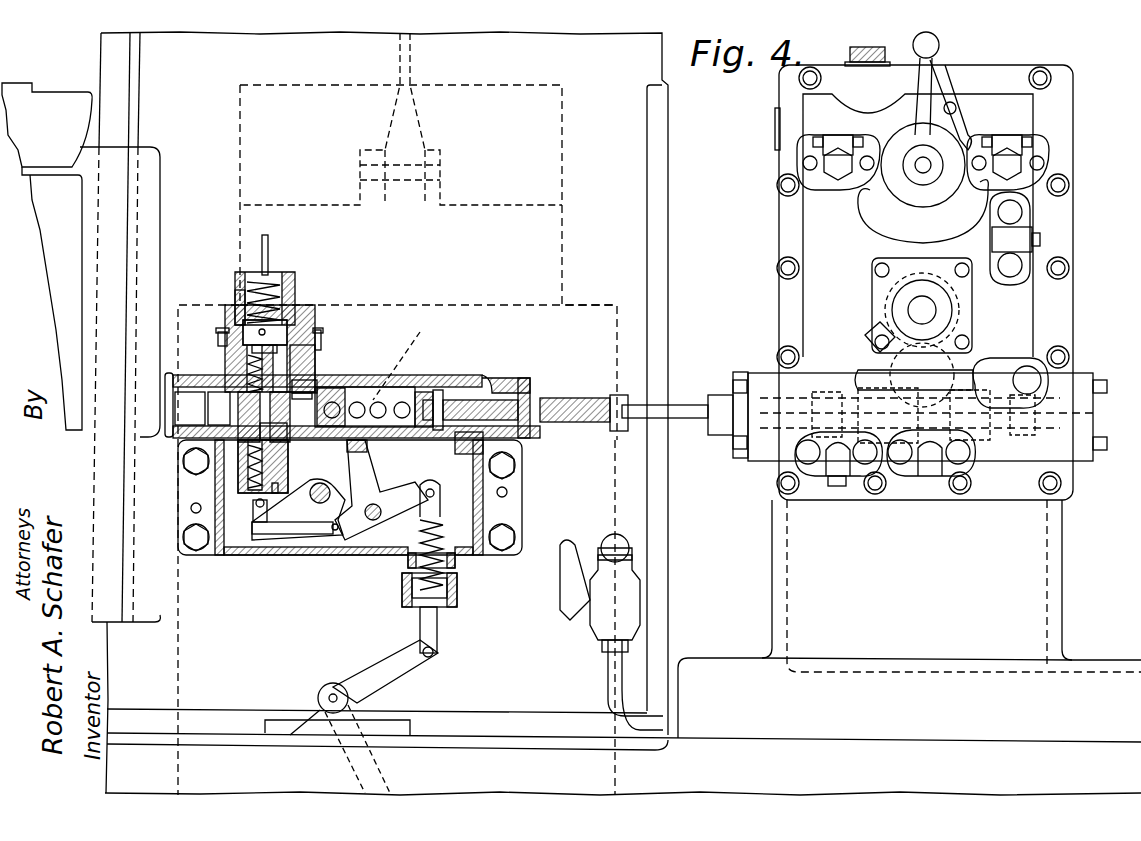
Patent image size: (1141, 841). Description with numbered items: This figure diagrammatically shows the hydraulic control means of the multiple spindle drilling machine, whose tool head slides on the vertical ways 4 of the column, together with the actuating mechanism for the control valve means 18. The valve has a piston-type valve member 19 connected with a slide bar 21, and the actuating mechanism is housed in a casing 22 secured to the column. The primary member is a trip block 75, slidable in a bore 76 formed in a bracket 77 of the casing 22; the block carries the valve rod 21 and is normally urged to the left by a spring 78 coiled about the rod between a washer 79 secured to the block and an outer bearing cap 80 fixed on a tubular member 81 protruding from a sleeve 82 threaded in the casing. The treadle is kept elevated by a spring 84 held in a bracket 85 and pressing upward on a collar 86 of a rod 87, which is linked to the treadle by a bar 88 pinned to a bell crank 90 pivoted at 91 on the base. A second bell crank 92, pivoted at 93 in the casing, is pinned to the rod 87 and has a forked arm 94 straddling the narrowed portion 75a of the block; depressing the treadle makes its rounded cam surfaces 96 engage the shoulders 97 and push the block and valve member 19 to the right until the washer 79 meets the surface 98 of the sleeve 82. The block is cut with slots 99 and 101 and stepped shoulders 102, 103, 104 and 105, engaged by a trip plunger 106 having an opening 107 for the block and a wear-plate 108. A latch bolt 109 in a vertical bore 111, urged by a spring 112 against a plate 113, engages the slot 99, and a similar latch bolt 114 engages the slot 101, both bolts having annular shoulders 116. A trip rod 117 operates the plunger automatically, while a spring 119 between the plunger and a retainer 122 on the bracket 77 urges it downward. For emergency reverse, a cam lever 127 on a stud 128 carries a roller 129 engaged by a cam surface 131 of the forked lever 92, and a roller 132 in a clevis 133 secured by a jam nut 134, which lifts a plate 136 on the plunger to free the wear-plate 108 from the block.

The vertical ways 4 is at (100, 60).
The control valve means 18 is at (768, 468).
The piston-type valve member 19 is at (1078, 410).
The slide bar 21 is at (690, 404).
The casing 22 is at (478, 376).
The trip block 75 is at (219, 409).
The narrowed portion 75a is at (388, 427).
The bore 76 is at (190, 408).
The bracket 77 is at (168, 374).
The spring 78 is at (572, 428).
The washer 79 is at (437, 431).
The outer bearing cap 80 is at (621, 398).
The tubular member 81 is at (560, 398).
The sleeve 82 is at (530, 385).
The spring 84 is at (412, 562).
The bracket 85 is at (463, 584).
The collar 86 is at (442, 535).
The rod 87 is at (437, 627).
The bar 88 is at (330, 740).
The bell crank 90 is at (410, 650).
The pivot 91 is at (330, 696).
The bell crank 92 is at (381, 490).
The pivot 93 is at (384, 505).
The forked arm 94 is at (404, 354).
The rounded cam surfaces 96 is at (365, 400).
The shoulders 97 is at (425, 392).
The surface 98 is at (470, 435).
The slot 99 is at (305, 393).
The slot 101 is at (272, 438).
The stepped shoulder 102 is at (305, 392).
The stepped shoulder 103 is at (345, 395).
The stepped shoulder 104 is at (364, 372).
The stepped shoulder 105 is at (360, 370).
The trip plunger 106 is at (282, 328).
The opening 107 is at (296, 318).
The wear-plate 108 is at (316, 359).
The latch bolt 109 is at (245, 380).
The vertical bore 111 is at (219, 332).
The spring 112 is at (238, 305).
The plate 113 is at (320, 332).
The latch bolt 114 is at (238, 445).
The annular shoulders 116 is at (248, 360).
The trip rod 117 is at (268, 252).
The spring 119 is at (282, 275).
The retainer 122 is at (295, 285).
The cam lever 127 is at (298, 509).
The stud 128 is at (328, 480).
The roller 129 is at (290, 540).
The cam surface 131 is at (336, 532).
The roller 132 is at (240, 495).
The clevis 133 is at (255, 512).
The jam nut 134 is at (262, 540).
The plate 136 is at (272, 489).